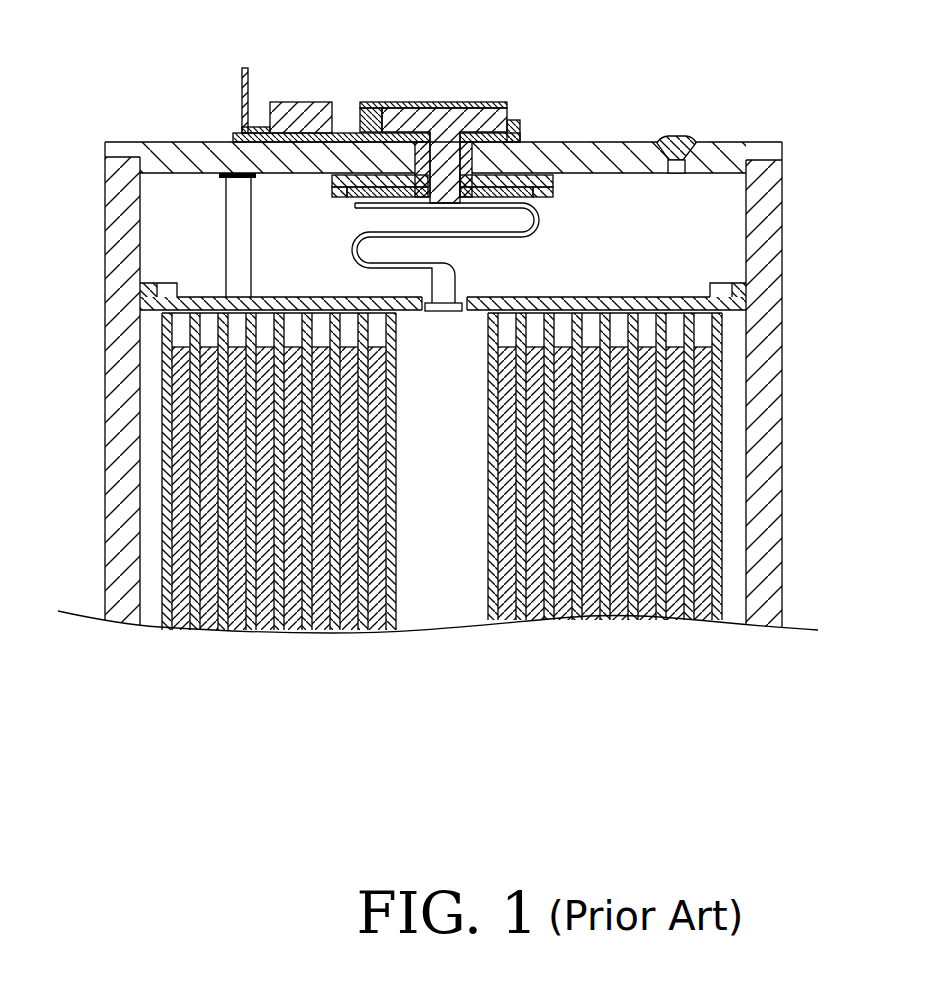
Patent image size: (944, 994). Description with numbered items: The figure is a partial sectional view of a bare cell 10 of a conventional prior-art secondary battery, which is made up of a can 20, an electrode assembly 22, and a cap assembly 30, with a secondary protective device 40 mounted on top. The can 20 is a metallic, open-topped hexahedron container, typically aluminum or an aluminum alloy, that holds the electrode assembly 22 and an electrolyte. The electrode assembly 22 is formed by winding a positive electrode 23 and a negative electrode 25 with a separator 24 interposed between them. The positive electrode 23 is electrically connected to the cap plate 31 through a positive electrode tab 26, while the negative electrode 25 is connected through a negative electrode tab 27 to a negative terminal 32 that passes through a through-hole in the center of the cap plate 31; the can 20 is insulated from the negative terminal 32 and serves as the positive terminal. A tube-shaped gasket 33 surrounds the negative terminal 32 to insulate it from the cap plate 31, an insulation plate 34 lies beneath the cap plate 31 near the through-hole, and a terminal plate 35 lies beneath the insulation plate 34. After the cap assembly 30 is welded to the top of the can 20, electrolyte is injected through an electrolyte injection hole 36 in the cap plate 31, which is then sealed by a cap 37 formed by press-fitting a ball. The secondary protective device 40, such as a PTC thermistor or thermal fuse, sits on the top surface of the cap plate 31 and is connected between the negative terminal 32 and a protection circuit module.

The bare cell 10 is at (452, 361).
The can 20 is at (768, 492).
The electrode assembly 22 is at (526, 518).
The positive electrode 23 is at (699, 612).
The separator 24 is at (717, 614).
The negative electrode 25 is at (675, 617).
The positive electrode tab 26 is at (233, 230).
The negative electrode tab 27 is at (362, 258).
The cap assembly 30 is at (484, 131).
The cap plate 31 is at (166, 149).
The negative terminal 32 is at (445, 118).
The gasket 33 is at (513, 127).
The insulation plate 34 is at (331, 104).
The terminal plate 35 is at (530, 197).
The electrolyte injection hole 36 is at (673, 177).
The cap 37 is at (677, 136).
The secondary protective device 40 is at (267, 115).